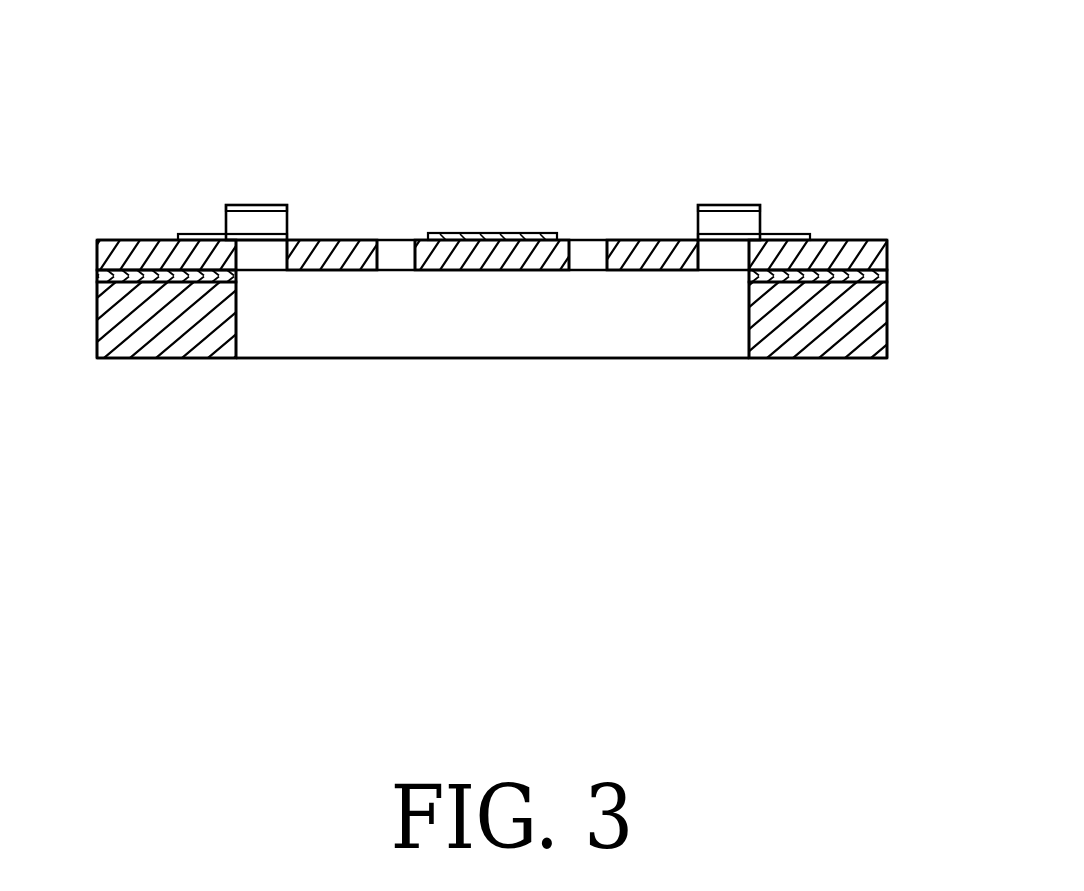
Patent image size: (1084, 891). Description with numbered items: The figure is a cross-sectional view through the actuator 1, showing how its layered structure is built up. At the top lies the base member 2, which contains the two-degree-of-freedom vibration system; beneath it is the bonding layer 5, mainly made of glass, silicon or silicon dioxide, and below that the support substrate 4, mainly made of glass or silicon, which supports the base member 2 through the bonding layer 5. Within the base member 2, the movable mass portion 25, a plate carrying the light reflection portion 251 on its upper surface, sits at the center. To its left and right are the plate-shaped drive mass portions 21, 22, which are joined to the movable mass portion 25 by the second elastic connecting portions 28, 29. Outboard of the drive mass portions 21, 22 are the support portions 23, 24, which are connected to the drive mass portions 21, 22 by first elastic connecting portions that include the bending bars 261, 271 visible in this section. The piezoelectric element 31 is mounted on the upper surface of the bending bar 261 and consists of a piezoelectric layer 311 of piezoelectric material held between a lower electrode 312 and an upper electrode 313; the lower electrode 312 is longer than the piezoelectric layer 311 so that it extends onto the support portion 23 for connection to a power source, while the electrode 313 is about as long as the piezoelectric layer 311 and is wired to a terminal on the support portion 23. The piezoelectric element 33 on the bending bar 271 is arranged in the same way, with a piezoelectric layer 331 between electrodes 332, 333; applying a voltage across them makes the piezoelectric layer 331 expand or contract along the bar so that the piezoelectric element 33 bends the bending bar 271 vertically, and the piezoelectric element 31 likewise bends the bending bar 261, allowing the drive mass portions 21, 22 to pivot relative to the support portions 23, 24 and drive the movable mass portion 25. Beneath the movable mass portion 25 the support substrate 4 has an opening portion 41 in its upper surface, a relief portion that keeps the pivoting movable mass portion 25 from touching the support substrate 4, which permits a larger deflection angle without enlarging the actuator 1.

The actuator 1 is at (622, 95).
The base member 2 is at (522, 291).
The support substrate 4 is at (880, 333).
The bonding layer 5 is at (883, 278).
The drive mass portion 21 is at (363, 262).
The drive mass portion 22 is at (658, 262).
The support portion 23 is at (138, 252).
The support portion 24 is at (843, 254).
The movable mass portion 25 is at (523, 258).
The second elastic connecting portion 28 is at (393, 256).
The second elastic connecting portion 29 is at (591, 256).
The piezoelectric element 31 is at (233, 154).
The piezoelectric element 33 is at (762, 157).
The opening portion 41 is at (337, 333).
The light reflection portion 251 is at (503, 233).
The bending bar 261 is at (270, 258).
The bending bar 271 is at (715, 258).
The piezoelectric layer 311 is at (238, 220).
The electrode 312 is at (200, 236).
The electrode 313 is at (273, 163).
The piezoelectric layer 331 is at (750, 223).
The electrode 332 is at (793, 237).
The electrode 333 is at (716, 164).